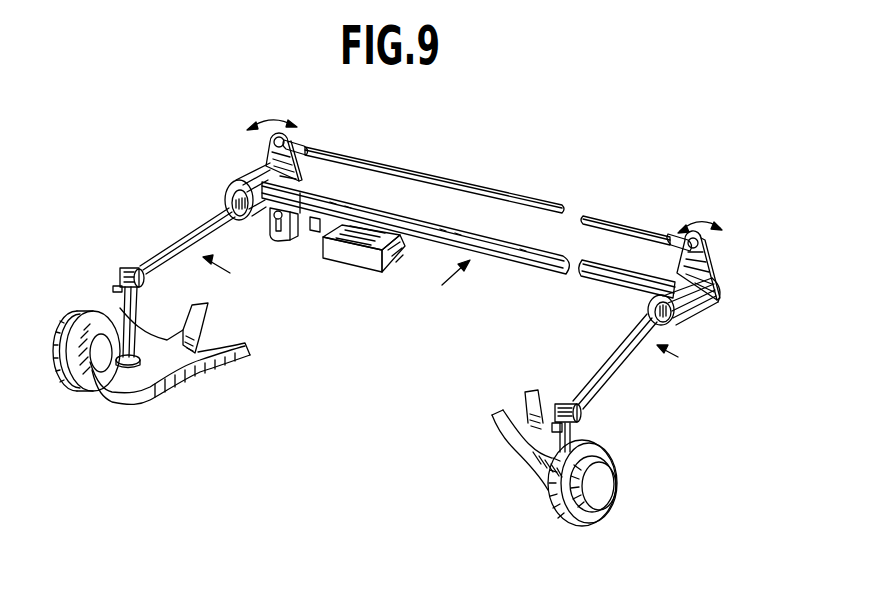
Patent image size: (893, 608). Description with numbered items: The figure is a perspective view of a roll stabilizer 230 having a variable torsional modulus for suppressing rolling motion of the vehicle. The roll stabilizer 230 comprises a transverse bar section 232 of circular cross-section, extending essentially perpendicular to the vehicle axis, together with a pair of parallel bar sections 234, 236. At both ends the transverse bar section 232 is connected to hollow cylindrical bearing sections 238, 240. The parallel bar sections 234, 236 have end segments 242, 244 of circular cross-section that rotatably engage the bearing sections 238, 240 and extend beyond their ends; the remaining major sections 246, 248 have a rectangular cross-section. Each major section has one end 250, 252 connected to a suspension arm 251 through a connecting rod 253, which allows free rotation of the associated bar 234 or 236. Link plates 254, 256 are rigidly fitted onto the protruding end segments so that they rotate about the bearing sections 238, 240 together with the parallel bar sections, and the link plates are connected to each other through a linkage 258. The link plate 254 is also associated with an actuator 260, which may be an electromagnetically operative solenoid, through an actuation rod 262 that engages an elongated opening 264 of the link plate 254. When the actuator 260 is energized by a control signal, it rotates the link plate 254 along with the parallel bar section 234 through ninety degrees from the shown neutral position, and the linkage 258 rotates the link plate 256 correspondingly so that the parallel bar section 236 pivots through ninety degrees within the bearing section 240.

The roll stabilizer 230 is at (440, 287).
The transverse bar section 232 is at (527, 270).
The parallel bar section 234 is at (210, 252).
The parallel bar section 236 is at (650, 361).
The bearing section 238 is at (250, 176).
The bearing section 240 is at (702, 307).
The end segment 242 is at (228, 198).
The end segment 244 is at (672, 324).
The major section 246 is at (205, 236).
The major section 248 is at (630, 363).
The end 250 is at (134, 265).
The suspension arm 251 is at (203, 377).
The end 252 is at (576, 402).
The connecting rod 253 is at (143, 290).
The link plate 254 is at (270, 139).
The link plate 256 is at (697, 257).
The linkage 258 is at (488, 190).
The actuator 260 is at (355, 259).
The actuation rod 262 is at (315, 223).
The elongated opening 264 is at (280, 238).